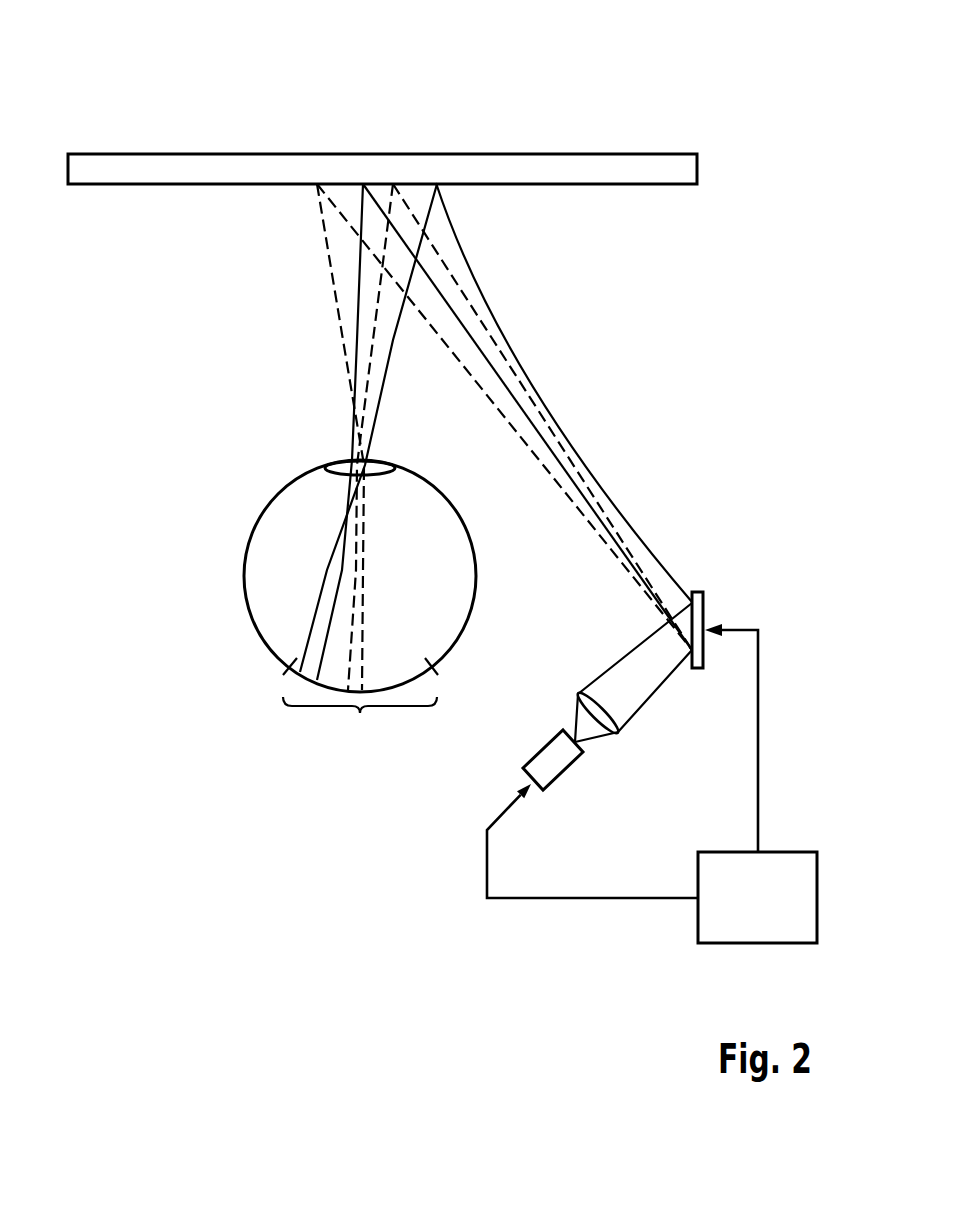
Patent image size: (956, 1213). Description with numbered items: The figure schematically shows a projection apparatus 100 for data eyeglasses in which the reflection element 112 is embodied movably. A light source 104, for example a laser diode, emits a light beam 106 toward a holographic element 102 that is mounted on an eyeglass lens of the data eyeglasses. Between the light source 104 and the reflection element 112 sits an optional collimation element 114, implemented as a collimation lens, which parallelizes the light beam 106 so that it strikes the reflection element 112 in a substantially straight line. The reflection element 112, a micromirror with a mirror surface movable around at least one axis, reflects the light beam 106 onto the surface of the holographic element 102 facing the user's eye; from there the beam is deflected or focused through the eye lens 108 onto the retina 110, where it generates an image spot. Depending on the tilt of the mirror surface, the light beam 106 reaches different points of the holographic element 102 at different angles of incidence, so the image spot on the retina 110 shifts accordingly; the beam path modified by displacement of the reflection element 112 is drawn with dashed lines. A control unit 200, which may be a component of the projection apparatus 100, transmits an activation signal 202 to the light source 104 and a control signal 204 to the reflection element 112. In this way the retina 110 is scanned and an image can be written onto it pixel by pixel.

The projection apparatus 100 is at (180, 79).
The holographic element 102 is at (697, 169).
The light source 104 is at (565, 773).
The light beam 106 is at (456, 306).
The eye lens 108 is at (337, 462).
The retina 110 is at (360, 702).
The reflection element 112 is at (705, 610).
The collimation element 114 is at (618, 735).
The control unit 200 is at (757, 944).
The activation signal 202 is at (552, 899).
The control signal 204 is at (758, 725).